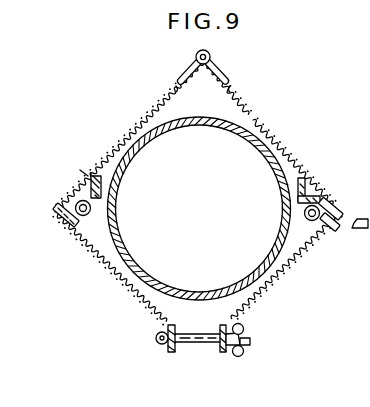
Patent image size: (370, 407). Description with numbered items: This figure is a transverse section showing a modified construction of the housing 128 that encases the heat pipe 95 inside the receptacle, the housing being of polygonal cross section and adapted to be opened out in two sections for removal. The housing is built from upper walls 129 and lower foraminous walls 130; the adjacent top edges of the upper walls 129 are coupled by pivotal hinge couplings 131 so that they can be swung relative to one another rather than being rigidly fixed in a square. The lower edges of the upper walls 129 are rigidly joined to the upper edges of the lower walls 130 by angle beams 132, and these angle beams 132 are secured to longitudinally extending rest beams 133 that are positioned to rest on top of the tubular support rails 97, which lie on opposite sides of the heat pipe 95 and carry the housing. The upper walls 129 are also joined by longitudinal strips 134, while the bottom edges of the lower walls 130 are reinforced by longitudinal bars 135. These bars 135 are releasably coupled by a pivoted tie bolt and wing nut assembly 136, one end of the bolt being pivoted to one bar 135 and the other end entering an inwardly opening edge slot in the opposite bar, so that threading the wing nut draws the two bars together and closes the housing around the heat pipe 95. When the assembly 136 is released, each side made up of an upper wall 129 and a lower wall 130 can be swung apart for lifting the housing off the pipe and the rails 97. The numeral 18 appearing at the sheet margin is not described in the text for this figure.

The frame member 18 is at (357, 127).
The heat pipe 95 is at (284, 179).
The tubular support rails 97 is at (91, 208).
The housing 128 is at (170, 95).
The upper walls 129 is at (150, 121).
The lower foraminous walls 130 is at (139, 297).
The hinge couplings 131 is at (212, 57).
The angle beams 132 is at (68, 222).
The rest beams 133 is at (90, 182).
The longitudinal strips 134 is at (264, 147).
The longitudinal bars 135 is at (164, 346).
The tie bolt and wing nut assembly 136 is at (208, 342).